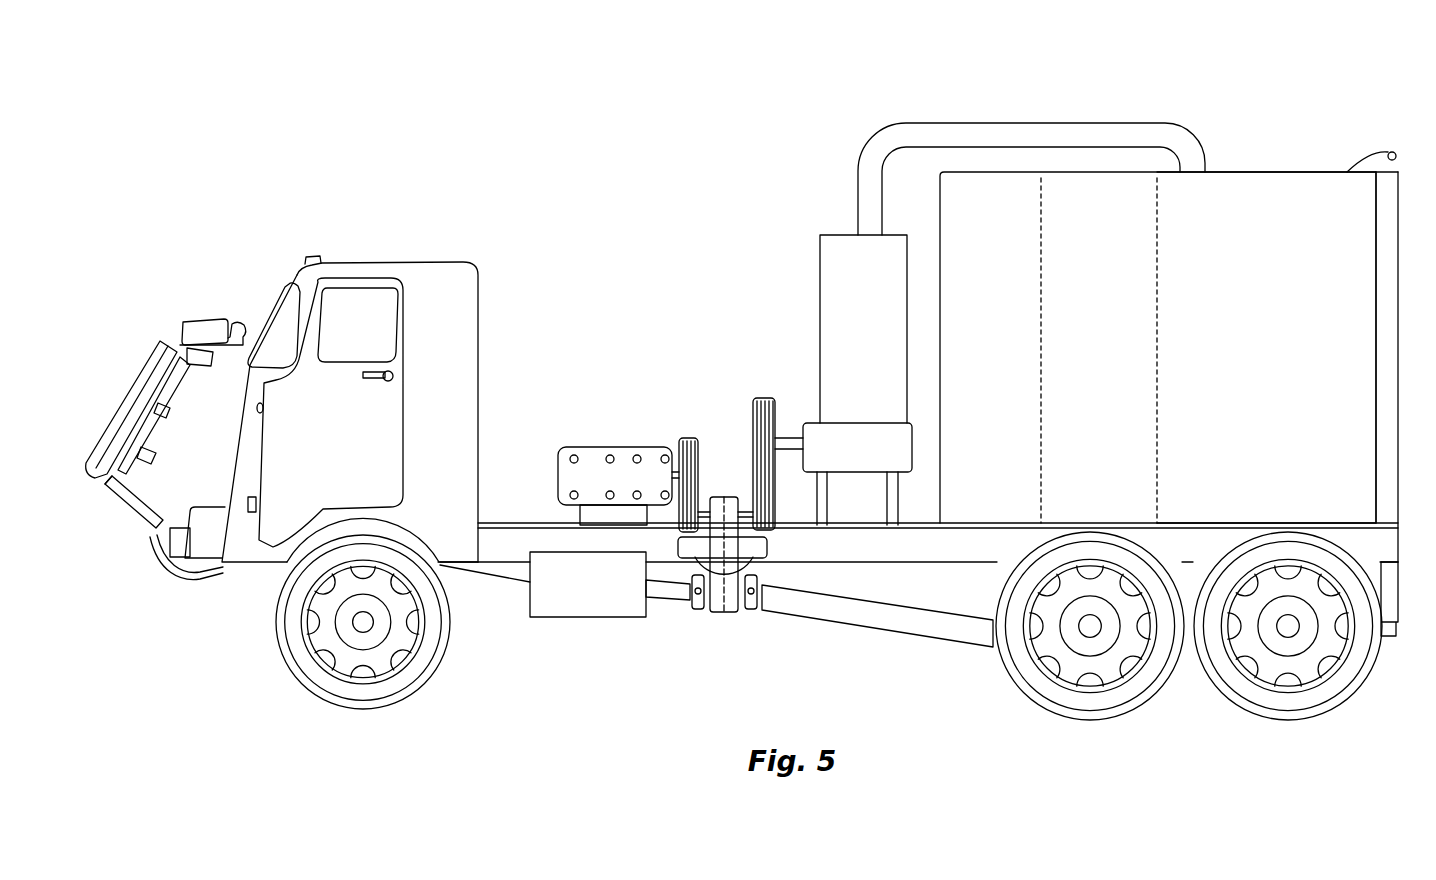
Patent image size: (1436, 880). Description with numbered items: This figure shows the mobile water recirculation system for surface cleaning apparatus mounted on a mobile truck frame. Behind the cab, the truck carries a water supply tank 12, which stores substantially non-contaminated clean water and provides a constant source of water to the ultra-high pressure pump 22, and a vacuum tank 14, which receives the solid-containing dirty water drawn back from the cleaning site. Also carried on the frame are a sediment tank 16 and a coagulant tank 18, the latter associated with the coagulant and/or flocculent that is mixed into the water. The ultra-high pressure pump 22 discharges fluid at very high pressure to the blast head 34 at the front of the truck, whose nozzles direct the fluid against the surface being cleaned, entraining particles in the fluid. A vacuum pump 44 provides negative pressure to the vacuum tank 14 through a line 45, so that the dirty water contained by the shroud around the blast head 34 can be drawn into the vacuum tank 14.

The water supply tank 12 is at (1091, 185).
The vacuum tank 14 is at (1238, 195).
The sediment tank 16 is at (982, 193).
The coagulant tank 18 is at (555, 587).
The ultra-high pressure pump 22 is at (624, 455).
The blast head 34 is at (223, 337).
The vacuum pump 44 is at (847, 455).
The line 45 is at (1053, 132).